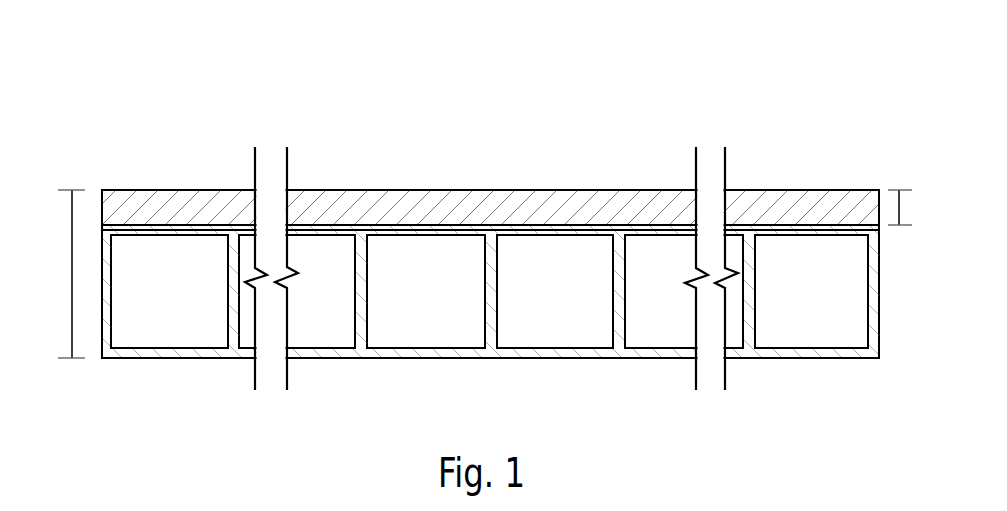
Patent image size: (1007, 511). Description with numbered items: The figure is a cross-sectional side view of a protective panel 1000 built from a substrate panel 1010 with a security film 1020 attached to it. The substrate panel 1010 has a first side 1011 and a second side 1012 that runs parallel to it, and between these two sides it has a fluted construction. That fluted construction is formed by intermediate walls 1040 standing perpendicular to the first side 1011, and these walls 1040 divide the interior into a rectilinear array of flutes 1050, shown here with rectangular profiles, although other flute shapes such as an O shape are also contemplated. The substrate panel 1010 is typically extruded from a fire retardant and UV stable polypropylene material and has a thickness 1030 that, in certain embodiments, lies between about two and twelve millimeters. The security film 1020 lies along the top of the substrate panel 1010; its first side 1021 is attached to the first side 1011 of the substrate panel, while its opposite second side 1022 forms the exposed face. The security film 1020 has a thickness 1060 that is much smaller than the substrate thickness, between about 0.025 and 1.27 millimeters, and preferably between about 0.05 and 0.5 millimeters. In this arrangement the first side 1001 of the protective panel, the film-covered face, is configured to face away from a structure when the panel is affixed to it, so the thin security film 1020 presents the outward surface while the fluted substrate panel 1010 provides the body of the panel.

The protective panel 1000 is at (53, 150).
The first side of the protective panel 1001 is at (652, 396).
The substrate panel 1010 is at (234, 354).
The first side of the substrate panel 1011 is at (112, 228).
The second side of the substrate panel 1012 is at (398, 356).
The security film 1020 is at (396, 210).
The first side of the security film 1021 is at (849, 232).
The second side of the security film 1022 is at (765, 190).
The thickness of the substrate panel 1030 is at (64, 277).
The intermediate walls 1040 is at (745, 292).
The flutes 1050 is at (844, 311).
The thickness of the security film 1060 is at (906, 208).